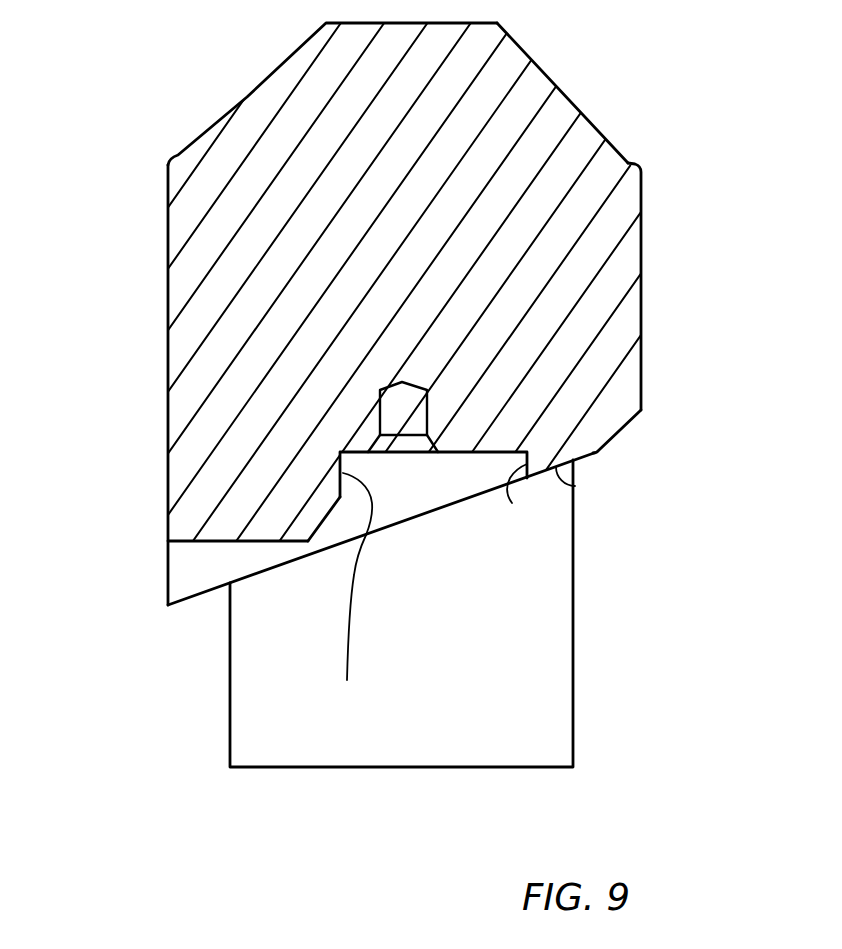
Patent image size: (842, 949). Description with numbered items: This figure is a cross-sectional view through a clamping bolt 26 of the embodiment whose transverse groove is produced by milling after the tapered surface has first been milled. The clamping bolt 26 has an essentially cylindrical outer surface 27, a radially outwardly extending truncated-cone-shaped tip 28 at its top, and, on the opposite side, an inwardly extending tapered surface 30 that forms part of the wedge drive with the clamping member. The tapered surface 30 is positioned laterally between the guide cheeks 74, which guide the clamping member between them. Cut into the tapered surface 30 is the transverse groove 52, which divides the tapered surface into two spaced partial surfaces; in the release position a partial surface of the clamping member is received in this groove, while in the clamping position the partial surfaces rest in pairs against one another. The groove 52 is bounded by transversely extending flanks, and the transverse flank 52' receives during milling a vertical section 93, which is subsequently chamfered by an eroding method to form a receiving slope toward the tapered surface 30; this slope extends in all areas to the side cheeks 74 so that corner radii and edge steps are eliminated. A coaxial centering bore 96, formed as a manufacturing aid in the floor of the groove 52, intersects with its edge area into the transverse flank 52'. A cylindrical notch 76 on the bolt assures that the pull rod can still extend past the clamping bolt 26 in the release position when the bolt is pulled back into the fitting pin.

The clamping bolt 26 is at (642, 259).
The outer surface 27 is at (168, 238).
The truncated-cone-shaped tip 28 is at (573, 103).
The tapered surface 30 is at (571, 489).
The transverse groove 52 is at (433, 545).
The transverse flank 52' is at (333, 576).
The guide cheek 74 is at (550, 703).
The cylindrical notch 76 is at (198, 557).
The vertical section 93 is at (347, 680).
The centering bore 96 is at (400, 415).